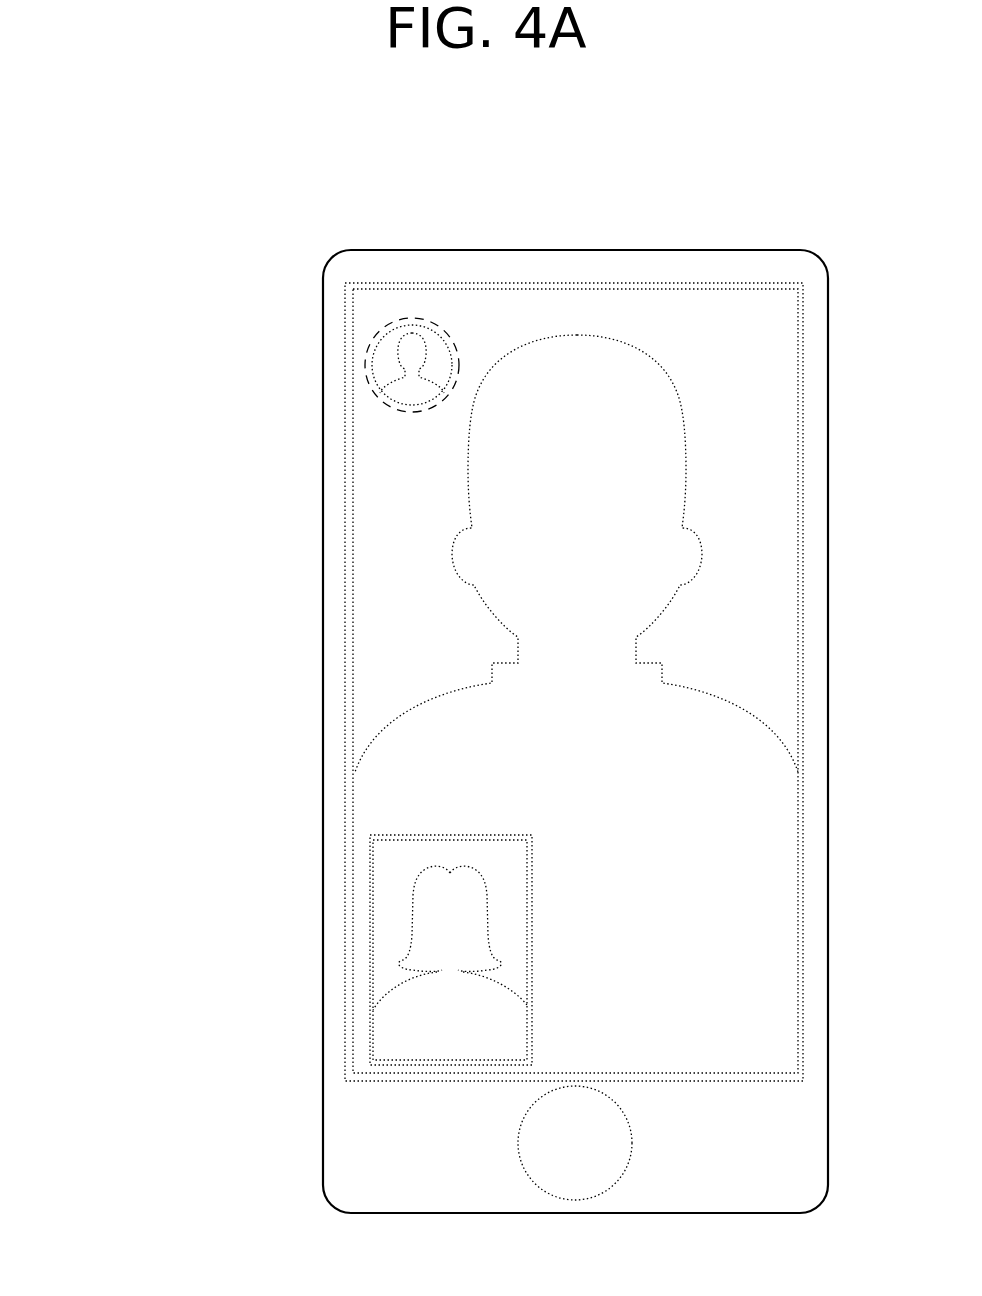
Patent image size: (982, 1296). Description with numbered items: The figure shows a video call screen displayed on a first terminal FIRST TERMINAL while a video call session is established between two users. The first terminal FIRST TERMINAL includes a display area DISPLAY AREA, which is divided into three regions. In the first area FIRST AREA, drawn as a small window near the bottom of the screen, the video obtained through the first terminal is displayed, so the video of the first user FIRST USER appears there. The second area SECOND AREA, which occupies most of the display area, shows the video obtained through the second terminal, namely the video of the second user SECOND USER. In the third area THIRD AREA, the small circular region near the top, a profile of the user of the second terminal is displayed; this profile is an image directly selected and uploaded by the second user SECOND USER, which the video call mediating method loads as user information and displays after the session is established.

The first terminal FIRST TERMINAL is at (322, 315).
The display area DISPLAY AREA is at (353, 480).
The second area SECOND AREA is at (345, 607).
The third area THIRD AREA is at (412, 322).
The second user SECOND USER is at (373, 728).
The first area FIRST AREA is at (372, 897).
The first user FIRST USER is at (395, 988).